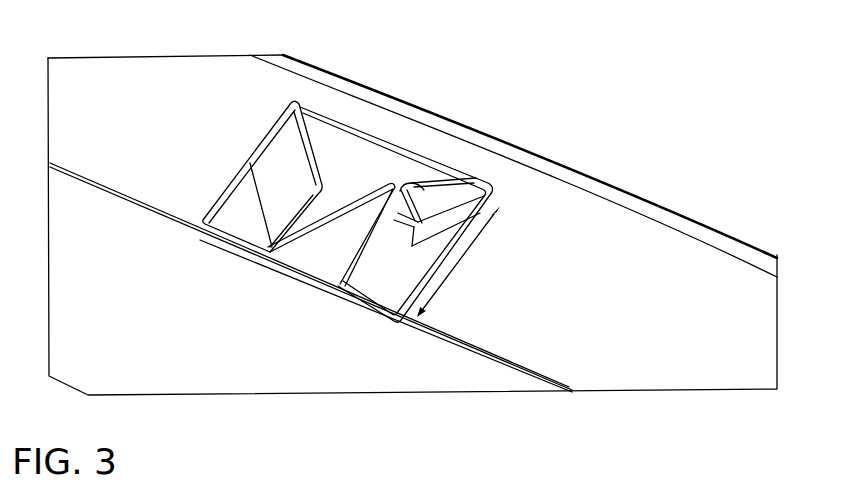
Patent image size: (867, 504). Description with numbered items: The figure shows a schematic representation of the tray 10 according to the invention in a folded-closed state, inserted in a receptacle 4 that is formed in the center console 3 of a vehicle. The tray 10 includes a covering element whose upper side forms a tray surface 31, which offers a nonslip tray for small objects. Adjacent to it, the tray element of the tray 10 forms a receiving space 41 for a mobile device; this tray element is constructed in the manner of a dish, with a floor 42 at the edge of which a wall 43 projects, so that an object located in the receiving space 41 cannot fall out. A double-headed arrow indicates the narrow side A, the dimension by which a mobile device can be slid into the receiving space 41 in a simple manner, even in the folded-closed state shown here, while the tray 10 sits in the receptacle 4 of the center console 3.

The center console 3 is at (376, 62).
The tray 10 is at (536, 79).
The receptacle 4 is at (356, 165).
The tray surface 31 is at (338, 259).
The receiving space 41 is at (431, 221).
The floor 42 is at (413, 243).
The wall 43 is at (423, 200).
The narrow side A is at (453, 267).